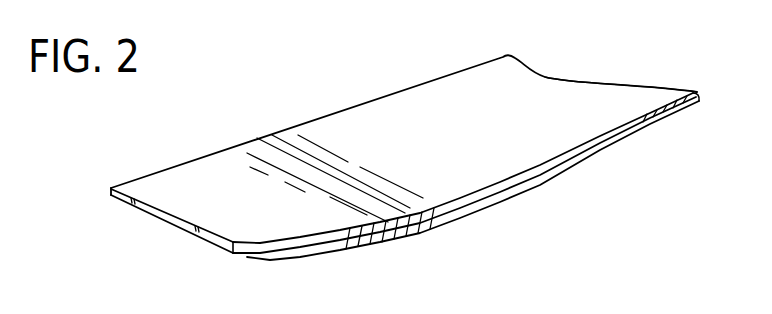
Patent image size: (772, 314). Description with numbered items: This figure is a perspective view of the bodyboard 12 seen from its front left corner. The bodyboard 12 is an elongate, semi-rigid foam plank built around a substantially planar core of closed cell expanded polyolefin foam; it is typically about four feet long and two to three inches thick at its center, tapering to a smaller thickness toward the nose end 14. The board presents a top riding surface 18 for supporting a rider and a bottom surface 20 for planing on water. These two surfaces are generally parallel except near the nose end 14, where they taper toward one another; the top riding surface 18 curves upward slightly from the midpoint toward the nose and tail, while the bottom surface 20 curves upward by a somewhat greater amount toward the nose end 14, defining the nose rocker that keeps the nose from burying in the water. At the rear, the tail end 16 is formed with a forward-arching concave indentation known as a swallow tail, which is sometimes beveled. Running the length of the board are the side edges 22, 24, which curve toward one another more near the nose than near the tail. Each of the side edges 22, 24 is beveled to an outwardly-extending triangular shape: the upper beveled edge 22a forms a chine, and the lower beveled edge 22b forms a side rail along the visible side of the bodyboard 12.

The bodyboard 12 is at (122, 150).
The nose end 14 is at (154, 212).
The tail end 16 is at (617, 83).
The top riding surface 18 is at (327, 215).
The bottom surface 20 is at (400, 247).
The side edge 22 is at (466, 180).
The upper beveled edge 22a is at (466, 201).
The lower beveled edge 22b is at (472, 210).
The side edge 24 is at (243, 137).